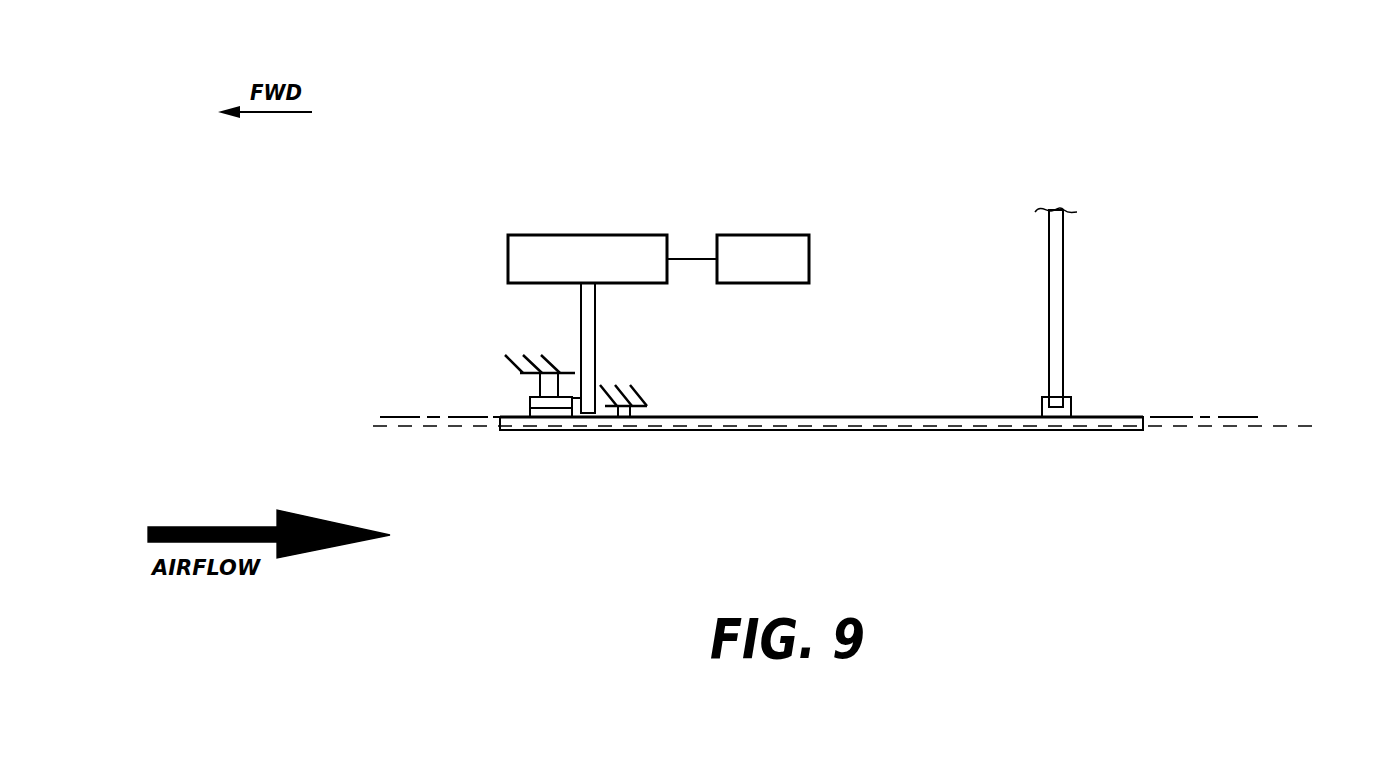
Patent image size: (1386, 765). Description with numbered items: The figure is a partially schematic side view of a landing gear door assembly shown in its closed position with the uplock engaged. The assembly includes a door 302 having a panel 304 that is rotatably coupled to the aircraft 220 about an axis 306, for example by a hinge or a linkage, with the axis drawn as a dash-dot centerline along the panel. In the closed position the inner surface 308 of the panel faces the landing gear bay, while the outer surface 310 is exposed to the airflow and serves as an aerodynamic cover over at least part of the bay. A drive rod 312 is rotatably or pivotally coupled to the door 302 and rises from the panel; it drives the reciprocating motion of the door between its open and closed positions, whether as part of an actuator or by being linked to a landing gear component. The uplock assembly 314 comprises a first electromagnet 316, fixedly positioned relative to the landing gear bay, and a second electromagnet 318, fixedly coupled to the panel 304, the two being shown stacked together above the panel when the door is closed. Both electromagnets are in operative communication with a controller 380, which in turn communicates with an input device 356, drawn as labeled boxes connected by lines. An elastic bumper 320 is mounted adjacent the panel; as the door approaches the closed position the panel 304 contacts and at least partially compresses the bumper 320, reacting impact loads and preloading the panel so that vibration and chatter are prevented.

The aircraft 220 is at (430, 428).
The door 302 is at (821, 448).
The panel 304 is at (993, 430).
The axis 306 is at (1235, 417).
The inner surface 308 is at (913, 417).
The outer surface 310 is at (913, 430).
The drive rod 312 is at (1063, 266).
The uplock assembly 314 is at (479, 382).
The first electromagnet 316 is at (543, 383).
The second electromagnet 318 is at (530, 412).
The elastic bumper 320 is at (647, 410).
The input device 356 is at (809, 259).
The controller 380 is at (508, 259).